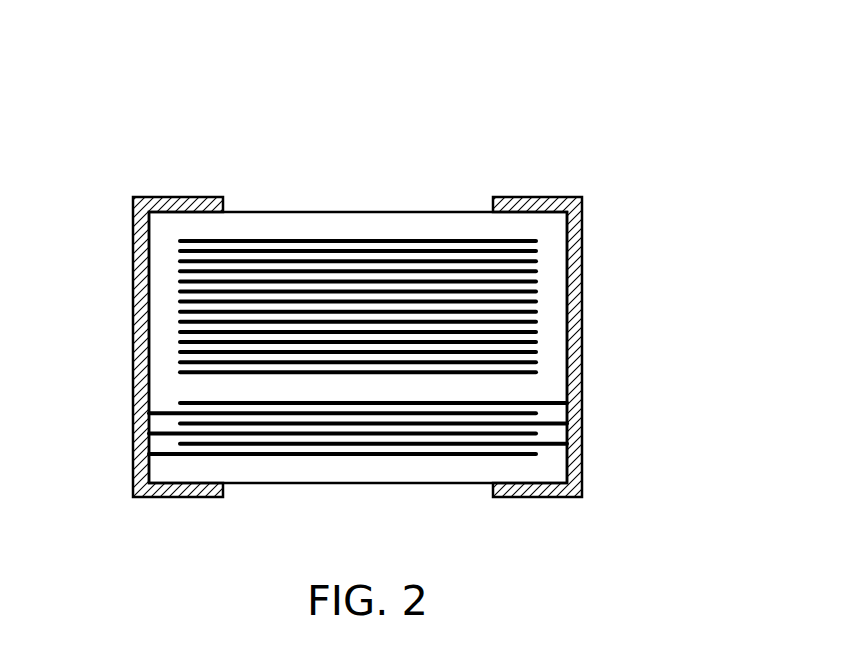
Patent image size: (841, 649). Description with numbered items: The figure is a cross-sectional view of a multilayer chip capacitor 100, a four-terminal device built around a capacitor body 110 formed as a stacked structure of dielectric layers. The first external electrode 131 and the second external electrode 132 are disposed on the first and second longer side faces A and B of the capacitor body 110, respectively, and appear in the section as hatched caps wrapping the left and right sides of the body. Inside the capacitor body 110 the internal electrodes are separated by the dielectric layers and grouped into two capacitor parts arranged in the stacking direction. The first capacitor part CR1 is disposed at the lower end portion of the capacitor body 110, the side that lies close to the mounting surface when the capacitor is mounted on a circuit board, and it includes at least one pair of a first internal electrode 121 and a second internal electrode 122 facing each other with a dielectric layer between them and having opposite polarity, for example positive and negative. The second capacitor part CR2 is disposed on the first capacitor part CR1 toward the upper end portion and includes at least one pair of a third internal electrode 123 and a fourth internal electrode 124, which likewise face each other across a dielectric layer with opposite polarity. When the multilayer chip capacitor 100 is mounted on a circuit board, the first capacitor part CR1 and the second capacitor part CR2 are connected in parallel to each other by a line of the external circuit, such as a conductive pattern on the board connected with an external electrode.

The multilayer chip capacitor 100 is at (508, 133).
The capacitor body 110 is at (363, 211).
The first internal electrode 121 is at (247, 456).
The second internal electrode 122 is at (302, 447).
The third internal electrode 123 is at (393, 374).
The fourth internal electrode 124 is at (452, 364).
The first external electrode 131 is at (182, 197).
The second external electrode 132 is at (563, 197).
The first capacitor part CR1 is at (599, 400).
The second capacitor part CR2 is at (599, 235).
The first longer side face A is at (138, 384).
The second longer side face B is at (583, 383).